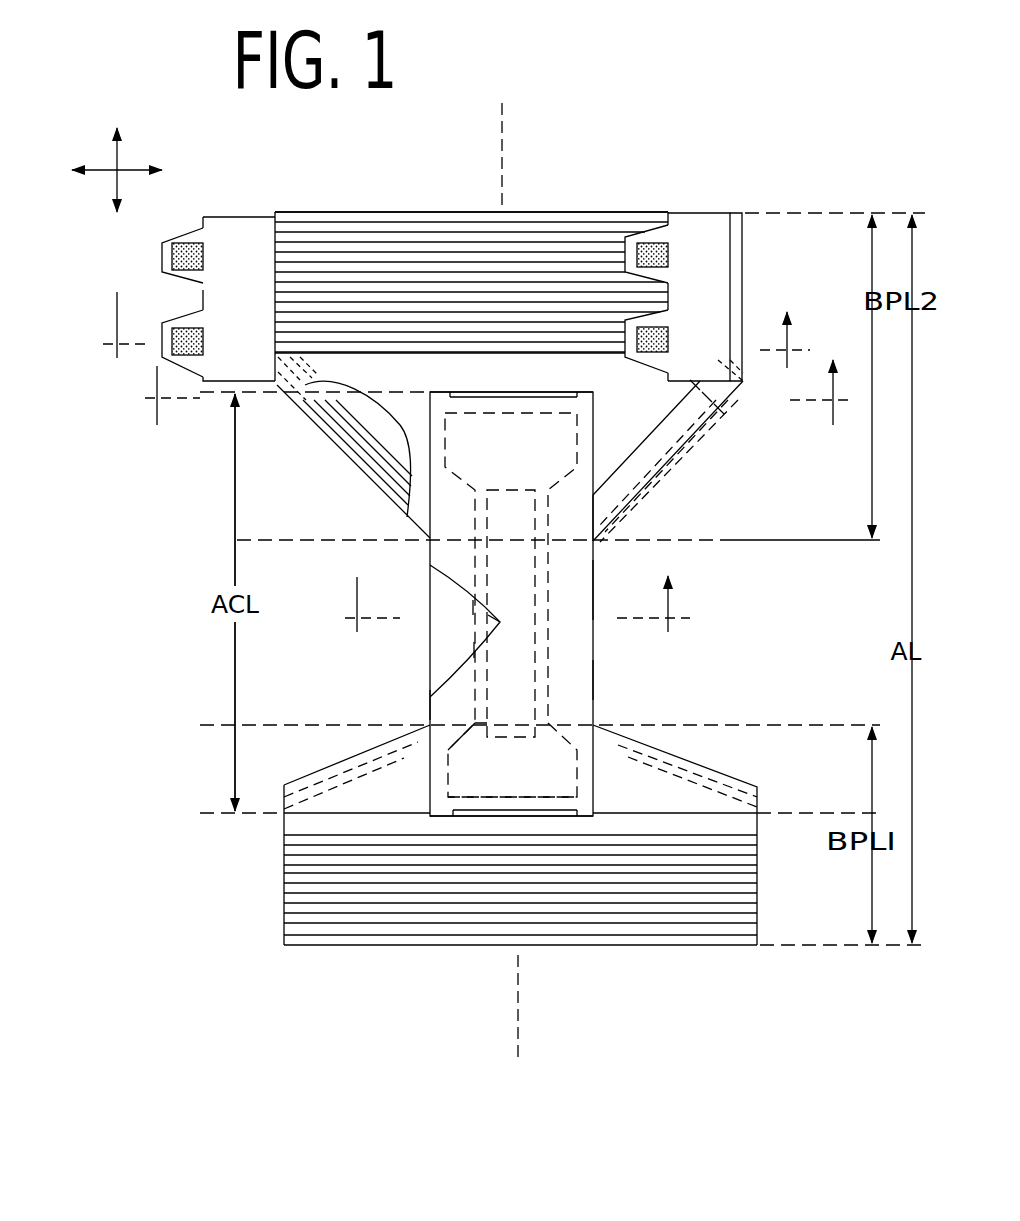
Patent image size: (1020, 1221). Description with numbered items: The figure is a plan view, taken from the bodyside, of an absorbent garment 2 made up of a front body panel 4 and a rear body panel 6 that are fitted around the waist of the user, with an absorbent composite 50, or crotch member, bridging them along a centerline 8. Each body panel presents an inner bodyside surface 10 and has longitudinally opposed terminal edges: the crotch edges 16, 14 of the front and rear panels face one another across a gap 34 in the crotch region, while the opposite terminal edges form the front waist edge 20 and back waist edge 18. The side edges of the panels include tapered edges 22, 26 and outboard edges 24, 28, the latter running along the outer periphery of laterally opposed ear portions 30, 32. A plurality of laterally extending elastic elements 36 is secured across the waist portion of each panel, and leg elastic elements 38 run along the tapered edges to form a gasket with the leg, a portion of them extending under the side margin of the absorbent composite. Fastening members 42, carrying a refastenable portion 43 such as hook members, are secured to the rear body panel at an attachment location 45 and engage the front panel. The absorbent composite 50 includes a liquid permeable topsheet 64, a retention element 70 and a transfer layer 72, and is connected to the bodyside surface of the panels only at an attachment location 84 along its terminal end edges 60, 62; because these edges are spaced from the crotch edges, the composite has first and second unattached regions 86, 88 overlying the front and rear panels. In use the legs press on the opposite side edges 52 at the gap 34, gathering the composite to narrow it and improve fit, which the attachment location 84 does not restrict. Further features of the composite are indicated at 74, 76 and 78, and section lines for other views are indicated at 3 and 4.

The absorbent garment 2 is at (205, 860).
The section line 3- 3 is at (495, 397).
The front body panel 4 is at (752, 748).
The rear body panel 6 is at (598, 196).
The centerline 8 is at (525, 1055).
The bodyside surface 10 is at (706, 418).
The terminal crotch edge of the rear body panel 14 is at (563, 548).
The terminal crotch edge of the front body panel 16 is at (573, 720).
The back waist edge 18 is at (538, 212).
The front waist edge 20 is at (597, 948).
The tapered edge 22 is at (313, 783).
The outboard edge 24 is at (285, 878).
The tapered edge 26 is at (350, 440).
The outboard edge 28 is at (263, 214).
The ear portion 30 is at (285, 262).
The ear portion 32 is at (312, 900).
The gap 34 is at (606, 648).
The elastic elements 36 is at (402, 218).
The leg elastic elements 38 is at (378, 462).
The fastening members 42 is at (713, 228).
The refastenable portion 43 is at (191, 346).
The attachment location 45 is at (743, 288).
The absorbent composite 50 is at (512, 562).
The side edges 52 is at (596, 592).
The terminal end edge 60 is at (496, 818).
The terminal end edge 62 is at (540, 393).
The topsheet 64 is at (571, 678).
The retention element 70 is at (473, 607).
The transfer layer 72 is at (496, 623).
The third elastic 74 is at (475, 650).
The chassis edge 76 is at (614, 522).
The absorbent core 78 is at (594, 433).
The attachment location 84 is at (506, 392).
The first unattached region 86 is at (538, 768).
The second unattached region 88 is at (535, 468).